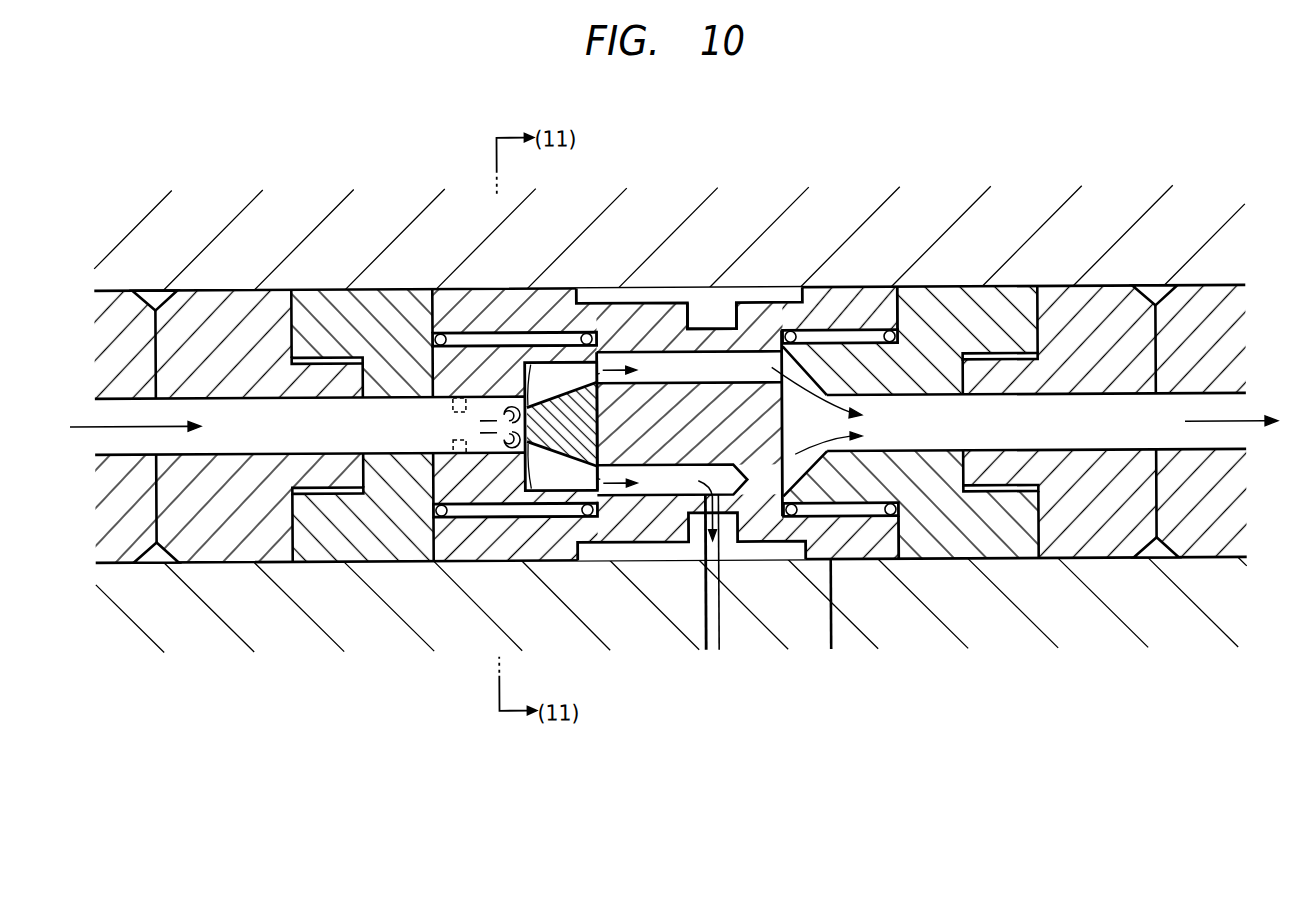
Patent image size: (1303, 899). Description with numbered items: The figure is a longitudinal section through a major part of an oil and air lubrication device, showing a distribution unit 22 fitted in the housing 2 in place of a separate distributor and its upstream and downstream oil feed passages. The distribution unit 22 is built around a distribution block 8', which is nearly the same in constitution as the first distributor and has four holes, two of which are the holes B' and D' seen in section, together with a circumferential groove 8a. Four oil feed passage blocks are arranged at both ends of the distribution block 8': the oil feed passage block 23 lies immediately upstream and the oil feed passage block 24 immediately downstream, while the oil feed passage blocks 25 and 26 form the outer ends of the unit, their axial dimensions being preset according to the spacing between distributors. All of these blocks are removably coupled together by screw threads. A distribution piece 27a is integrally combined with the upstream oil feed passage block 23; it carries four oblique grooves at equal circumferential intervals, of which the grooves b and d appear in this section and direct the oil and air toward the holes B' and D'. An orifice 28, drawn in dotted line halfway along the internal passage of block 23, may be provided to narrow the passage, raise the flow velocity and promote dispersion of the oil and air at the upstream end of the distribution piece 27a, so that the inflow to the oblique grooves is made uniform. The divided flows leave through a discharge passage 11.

The housing 2 is at (670, 385).
The distribution block 8' is at (665, 351).
The circumferential groove 8a is at (756, 218).
The distribution unit 22 is at (826, 166).
The discharge pipe 11 is at (774, 586).
The oil feed passage block 23 is at (362, 498).
The oil feed passage block 24 is at (910, 489).
The oil feed passage block 25 is at (229, 495).
The oil feed passage block 26 is at (1104, 482).
The distribution piece 27a is at (624, 525).
The orifice 28 is at (451, 426).
The oblique groove b is at (553, 322).
The oblique groove d is at (551, 545).
The hole B' is at (698, 335).
The hole D' is at (701, 526).